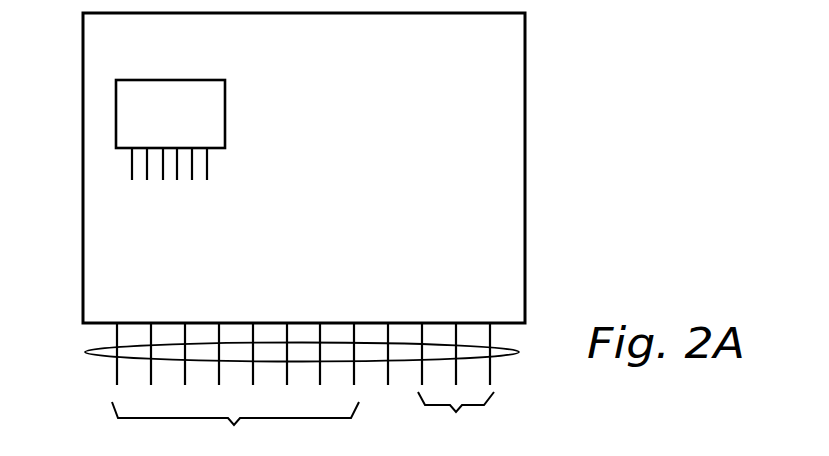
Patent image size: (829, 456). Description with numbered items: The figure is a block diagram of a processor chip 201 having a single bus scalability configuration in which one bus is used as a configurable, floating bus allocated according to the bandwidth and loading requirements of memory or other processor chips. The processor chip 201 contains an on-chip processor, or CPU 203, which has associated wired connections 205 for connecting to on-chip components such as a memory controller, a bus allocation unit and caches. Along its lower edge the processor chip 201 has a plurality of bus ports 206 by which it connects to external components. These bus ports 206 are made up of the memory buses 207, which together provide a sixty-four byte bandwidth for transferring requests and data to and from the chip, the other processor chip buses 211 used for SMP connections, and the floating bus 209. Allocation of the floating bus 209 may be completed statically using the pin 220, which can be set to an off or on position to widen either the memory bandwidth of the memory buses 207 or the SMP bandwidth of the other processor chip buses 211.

The processor chip 201 is at (525, 98).
The on-chip processor (CPU) 203 is at (197, 80).
The wired connections 205 is at (132, 165).
The bus ports 206 is at (86, 355).
The memory buses 207 is at (235, 389).
The floating bus 209 is at (388, 390).
The other processor chip buses 211 is at (456, 383).
The pin 220 is at (403, 263).